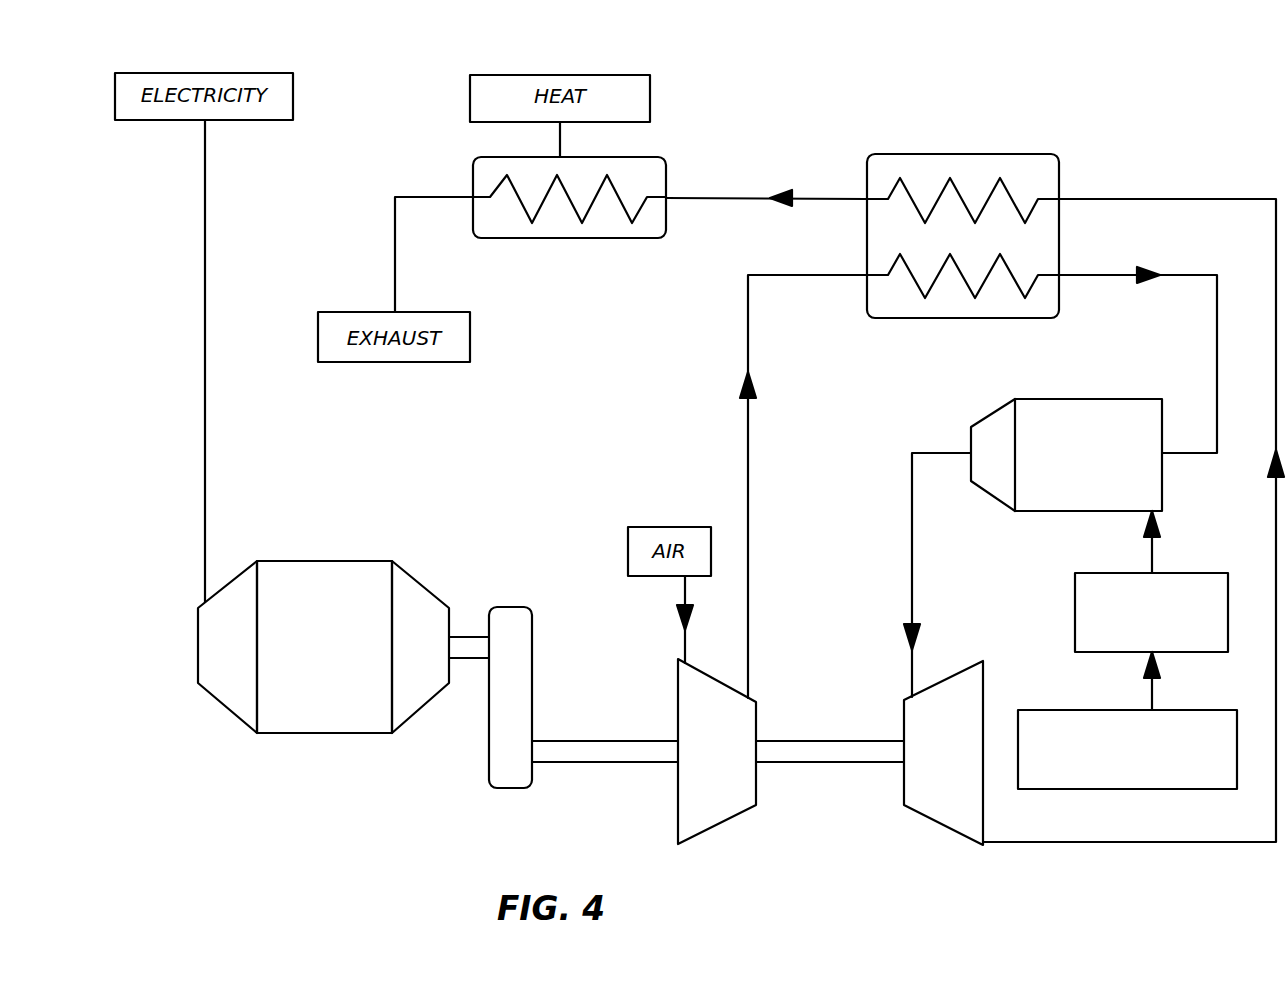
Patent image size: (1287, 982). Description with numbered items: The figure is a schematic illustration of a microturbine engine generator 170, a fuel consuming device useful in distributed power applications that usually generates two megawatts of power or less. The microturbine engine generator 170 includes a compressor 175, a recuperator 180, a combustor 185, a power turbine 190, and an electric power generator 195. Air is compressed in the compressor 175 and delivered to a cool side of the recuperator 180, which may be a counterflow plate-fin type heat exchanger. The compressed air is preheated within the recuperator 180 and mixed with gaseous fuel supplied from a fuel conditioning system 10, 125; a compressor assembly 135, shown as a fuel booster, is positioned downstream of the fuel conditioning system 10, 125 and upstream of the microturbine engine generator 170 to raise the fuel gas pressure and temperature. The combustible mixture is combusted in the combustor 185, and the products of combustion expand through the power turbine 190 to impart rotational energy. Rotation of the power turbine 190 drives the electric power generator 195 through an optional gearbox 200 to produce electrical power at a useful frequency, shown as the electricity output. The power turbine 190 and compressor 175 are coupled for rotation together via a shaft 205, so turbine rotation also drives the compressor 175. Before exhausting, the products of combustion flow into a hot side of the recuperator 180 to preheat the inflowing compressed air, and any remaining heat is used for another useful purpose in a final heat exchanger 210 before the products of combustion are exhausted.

The microturbine engine generator 170 is at (987, 70).
The recuperator 180 is at (1053, 177).
The final heat exchanger 210 is at (670, 177).
The combustor 185 is at (997, 418).
The compressor assembly 135 is at (1080, 605).
The fuel conditioning system 10 is at (1127, 775).
The fuel conditioning system 125 is at (1037, 787).
The power turbine 190 is at (945, 810).
The compressor 175 is at (722, 812).
The shaft 205 is at (783, 747).
The gearbox 200 is at (483, 725).
The electric power generator 195 is at (358, 568).